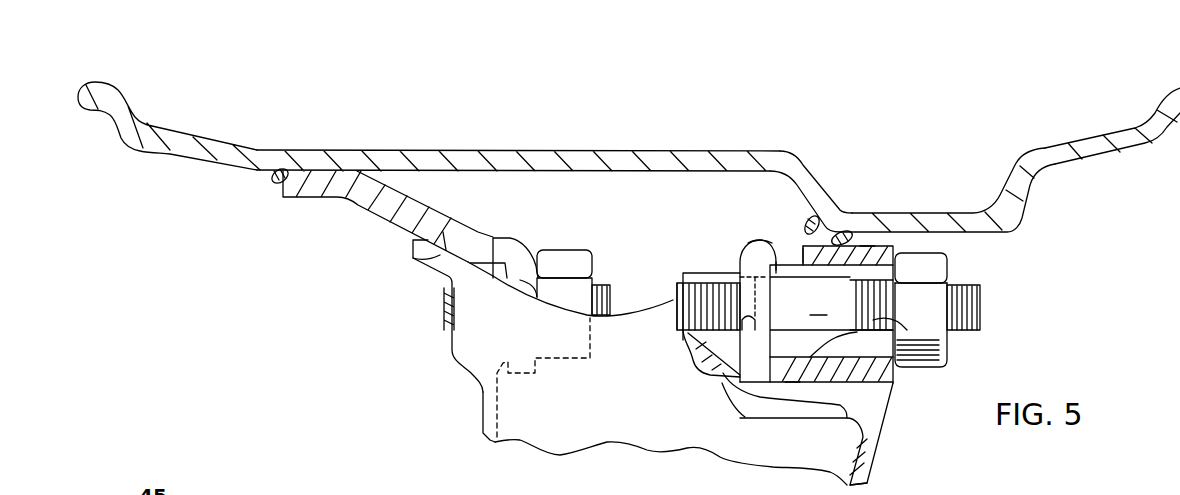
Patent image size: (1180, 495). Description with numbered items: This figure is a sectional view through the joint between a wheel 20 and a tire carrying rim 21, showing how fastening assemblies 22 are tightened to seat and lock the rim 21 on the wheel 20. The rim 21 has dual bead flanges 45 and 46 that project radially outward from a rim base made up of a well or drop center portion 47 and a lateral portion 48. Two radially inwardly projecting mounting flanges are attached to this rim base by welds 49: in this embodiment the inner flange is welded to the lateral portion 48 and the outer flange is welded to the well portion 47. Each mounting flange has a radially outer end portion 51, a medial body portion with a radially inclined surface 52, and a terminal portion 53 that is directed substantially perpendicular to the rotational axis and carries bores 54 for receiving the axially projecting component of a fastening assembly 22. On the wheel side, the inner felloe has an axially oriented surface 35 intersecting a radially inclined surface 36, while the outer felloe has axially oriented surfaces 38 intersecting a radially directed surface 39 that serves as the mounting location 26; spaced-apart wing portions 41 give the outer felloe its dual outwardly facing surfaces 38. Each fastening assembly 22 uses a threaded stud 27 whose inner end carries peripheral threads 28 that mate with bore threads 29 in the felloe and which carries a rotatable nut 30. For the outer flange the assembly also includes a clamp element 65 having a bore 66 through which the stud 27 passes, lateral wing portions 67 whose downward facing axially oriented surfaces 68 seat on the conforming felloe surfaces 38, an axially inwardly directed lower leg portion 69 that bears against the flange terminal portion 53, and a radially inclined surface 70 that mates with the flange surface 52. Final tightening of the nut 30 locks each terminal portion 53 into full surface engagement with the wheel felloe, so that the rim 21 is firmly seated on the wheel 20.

The wheel 20 is at (459, 430).
The tire carrying rim 21 is at (573, 149).
The fastening assembly 22 is at (556, 212).
The mounting location 26 is at (441, 314).
The threaded stud 27 is at (608, 296).
The peripheral threads 28 is at (687, 318).
The bore threads 29 is at (683, 286).
The nut 30 is at (563, 260).
The axially oriented surface 35 is at (494, 239).
The radially inclined surface 36 is at (443, 240).
The axially oriented surfaces 38 is at (758, 238).
The radially directed surface 39 is at (725, 376).
The wing portions 41 is at (880, 402).
The bead flange 45 is at (123, 90).
The bead flange 46 is at (1162, 93).
The well or drop center portion 47 is at (937, 212).
The lateral portion 48 is at (418, 162).
The welds 49 is at (273, 184).
The radially outer end portion 51 is at (320, 199).
The radially inclined surface 52 is at (413, 250).
The terminal portion 53 is at (537, 290).
The bores 54 is at (758, 318).
The clamp element 65 is at (888, 373).
The bore 66 is at (880, 319).
The lateral wing portions 67 is at (887, 252).
The axially oriented surfaces 68 is at (813, 248).
The lower leg portion 69 is at (793, 383).
The radially inclined surface 70 is at (803, 260).